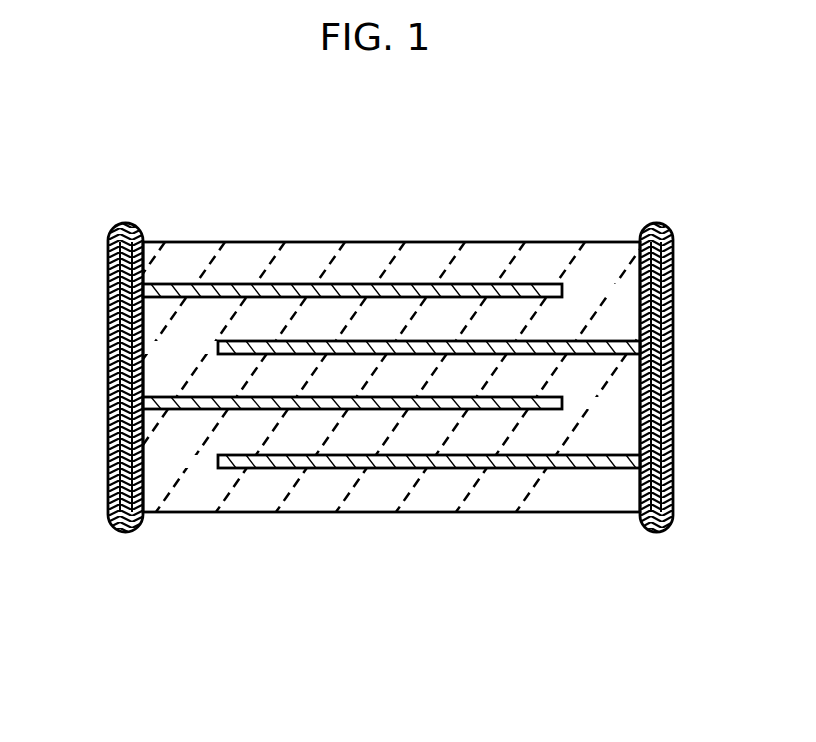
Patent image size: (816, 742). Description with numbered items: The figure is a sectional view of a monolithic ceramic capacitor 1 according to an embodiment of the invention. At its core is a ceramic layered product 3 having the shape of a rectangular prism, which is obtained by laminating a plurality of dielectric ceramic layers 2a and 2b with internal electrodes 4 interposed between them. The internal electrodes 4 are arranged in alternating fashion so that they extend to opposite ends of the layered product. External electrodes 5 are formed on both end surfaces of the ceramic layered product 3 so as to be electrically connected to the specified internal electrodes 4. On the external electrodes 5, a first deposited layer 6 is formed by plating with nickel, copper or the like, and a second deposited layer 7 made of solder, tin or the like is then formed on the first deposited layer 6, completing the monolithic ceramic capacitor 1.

The monolithic ceramic capacitor 1 is at (168, 185).
The dielectric ceramic layer 2a is at (421, 264).
The dielectric ceramic layer 2b is at (496, 305).
The ceramic layered product 3 is at (302, 240).
The internal electrode 4 is at (180, 284).
The external electrode 5 is at (110, 278).
The first deposited layer 6 is at (118, 350).
The second deposited layer 7 is at (110, 447).